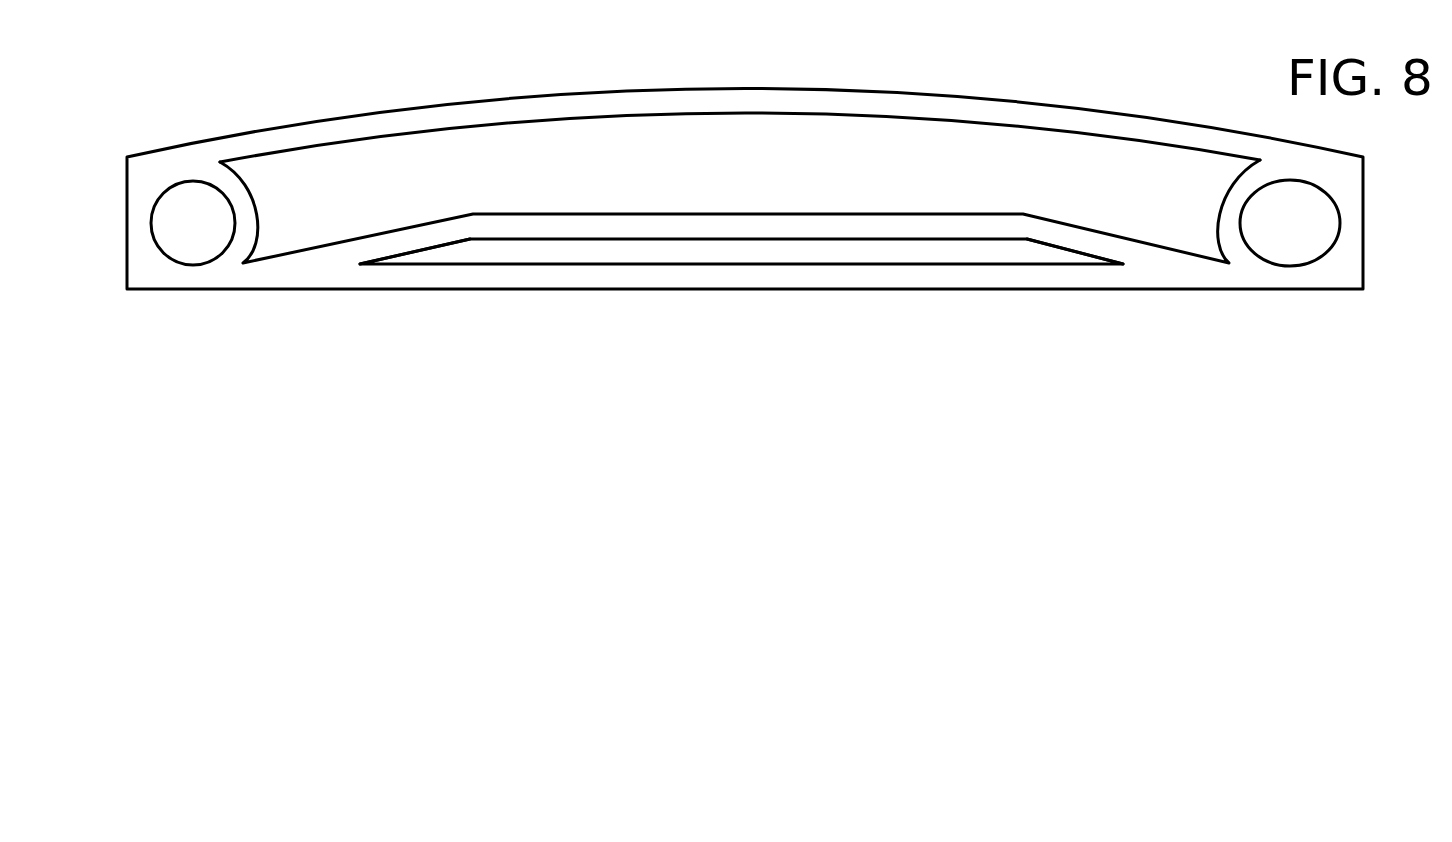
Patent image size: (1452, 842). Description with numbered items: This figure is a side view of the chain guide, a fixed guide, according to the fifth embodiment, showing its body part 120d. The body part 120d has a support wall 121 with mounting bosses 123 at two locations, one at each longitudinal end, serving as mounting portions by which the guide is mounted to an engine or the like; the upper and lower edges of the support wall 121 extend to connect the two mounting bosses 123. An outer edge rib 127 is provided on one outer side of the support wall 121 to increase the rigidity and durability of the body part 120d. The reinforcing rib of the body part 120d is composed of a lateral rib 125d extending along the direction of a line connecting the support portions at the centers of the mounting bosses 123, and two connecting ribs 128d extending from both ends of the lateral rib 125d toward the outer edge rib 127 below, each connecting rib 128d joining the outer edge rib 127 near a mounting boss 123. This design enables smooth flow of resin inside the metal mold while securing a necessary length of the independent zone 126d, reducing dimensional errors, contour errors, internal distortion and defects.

The body part 120d is at (308, 103).
The support wall 121 is at (579, 162).
The mounting boss 123 is at (245, 220).
The lateral rib 125d is at (720, 220).
The independent zone 126d is at (741, 251).
The outer edge rib 127 is at (875, 102).
The connecting rib 128d is at (417, 238).